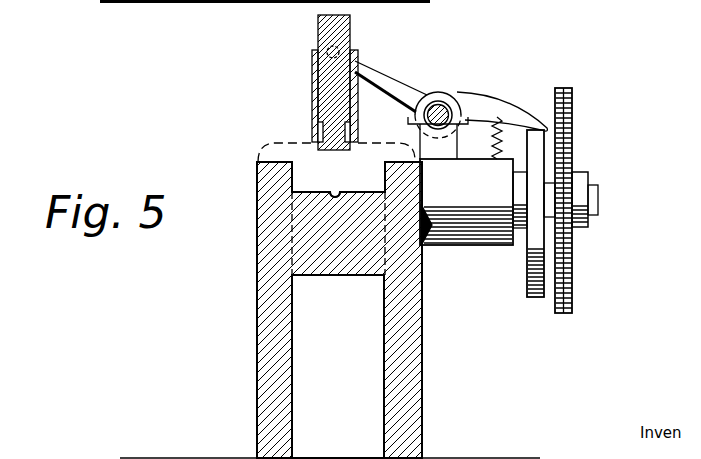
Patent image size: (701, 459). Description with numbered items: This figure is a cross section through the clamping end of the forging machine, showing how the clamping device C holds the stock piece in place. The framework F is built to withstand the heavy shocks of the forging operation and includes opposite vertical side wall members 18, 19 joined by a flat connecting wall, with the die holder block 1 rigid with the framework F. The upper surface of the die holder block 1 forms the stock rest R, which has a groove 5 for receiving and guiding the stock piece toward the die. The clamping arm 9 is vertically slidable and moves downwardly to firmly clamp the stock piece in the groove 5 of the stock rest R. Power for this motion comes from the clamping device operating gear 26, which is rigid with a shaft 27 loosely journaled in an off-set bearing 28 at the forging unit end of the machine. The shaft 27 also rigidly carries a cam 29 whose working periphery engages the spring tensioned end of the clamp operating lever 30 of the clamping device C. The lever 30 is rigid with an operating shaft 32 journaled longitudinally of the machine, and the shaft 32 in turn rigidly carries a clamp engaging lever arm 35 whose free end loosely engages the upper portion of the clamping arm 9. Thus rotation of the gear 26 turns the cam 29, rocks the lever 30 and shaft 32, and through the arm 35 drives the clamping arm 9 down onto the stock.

The framework F is at (258, 250).
The die holder block 1 is at (337, 248).
The vertical side wall member 19 is at (278, 338).
The vertical side wall member 18 is at (398, 376).
The groove 5 is at (341, 186).
The stock rest R is at (317, 188).
The clamping arm 9 is at (328, 88).
The clamp engaging lever arm 35 is at (391, 87).
The clamping device C is at (438, 109).
The operating shaft 32 is at (441, 112).
The clamp operating lever 30 is at (494, 100).
The off-set bearing 28 is at (473, 202).
The cam 29 is at (531, 272).
The clamping device operating gear 26 is at (573, 137).
The shaft 27 is at (598, 197).